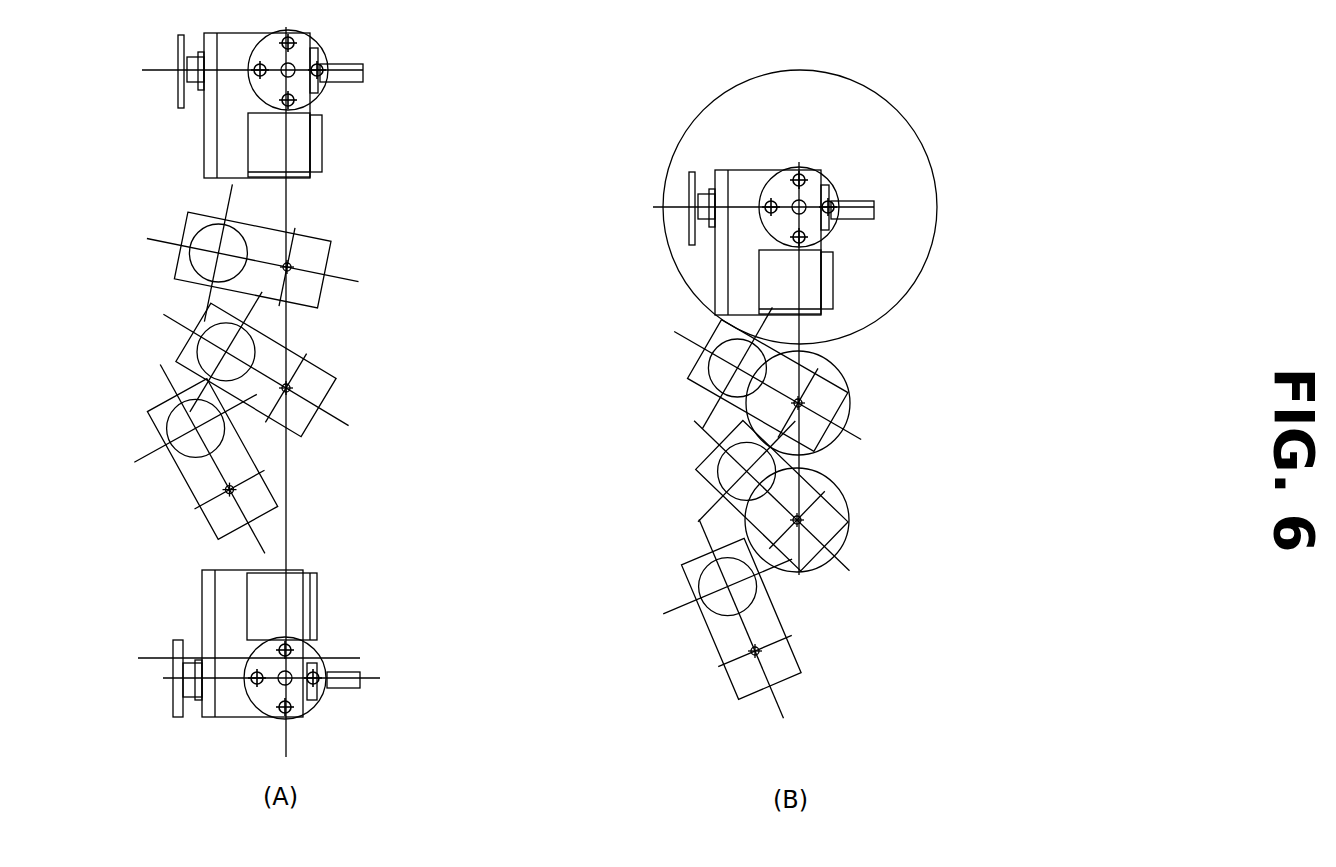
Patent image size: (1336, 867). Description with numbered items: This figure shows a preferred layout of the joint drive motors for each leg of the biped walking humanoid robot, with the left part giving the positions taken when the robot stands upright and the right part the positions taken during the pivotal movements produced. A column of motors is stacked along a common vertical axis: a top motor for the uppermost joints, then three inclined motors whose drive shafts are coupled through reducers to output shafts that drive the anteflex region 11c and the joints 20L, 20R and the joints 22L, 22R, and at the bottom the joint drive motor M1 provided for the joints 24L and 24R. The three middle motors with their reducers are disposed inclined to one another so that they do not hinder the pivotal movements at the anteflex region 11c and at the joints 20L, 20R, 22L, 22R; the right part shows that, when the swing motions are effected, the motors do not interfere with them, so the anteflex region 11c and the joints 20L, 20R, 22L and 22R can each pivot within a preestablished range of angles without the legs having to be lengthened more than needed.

The joint drive motor M1 is at (294, 644).
The anteflex region 11c is at (292, 267).
The joint 20L is at (285, 388).
The joint 20R is at (289, 389).
The joint 22L is at (230, 489).
The joint 22R is at (232, 490).
The joint 24L is at (347, 653).
The joint 24R is at (290, 662).